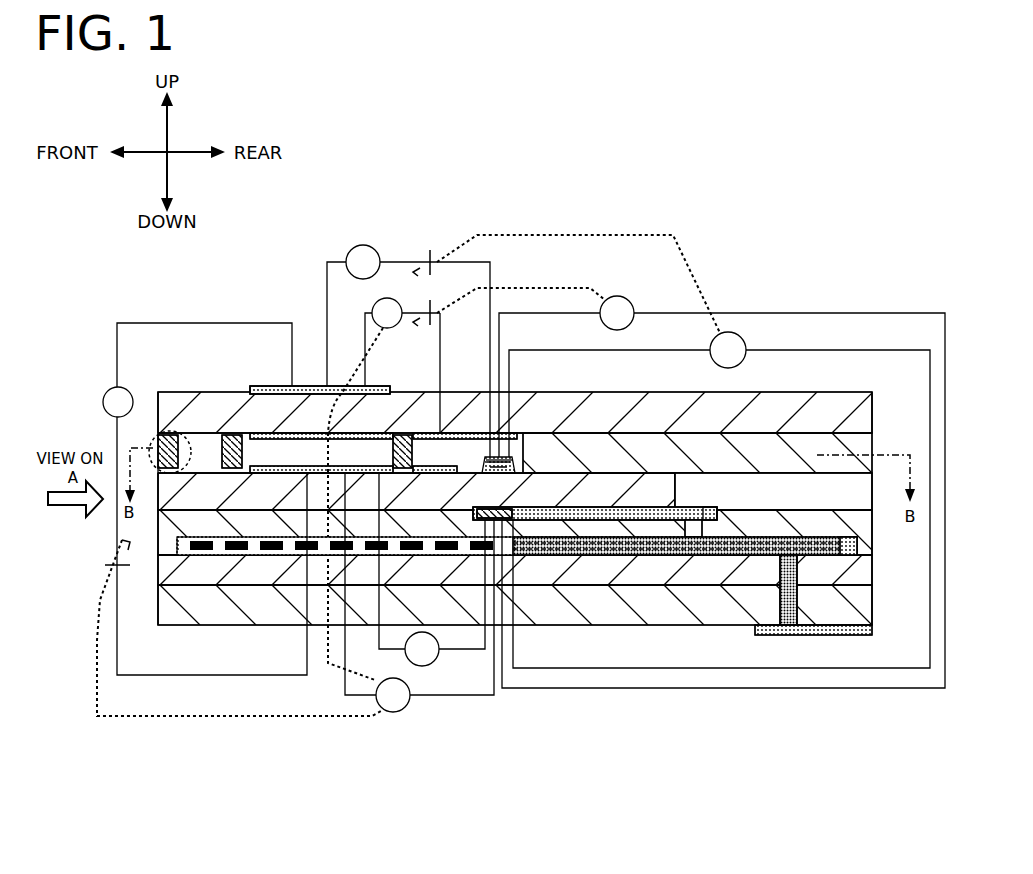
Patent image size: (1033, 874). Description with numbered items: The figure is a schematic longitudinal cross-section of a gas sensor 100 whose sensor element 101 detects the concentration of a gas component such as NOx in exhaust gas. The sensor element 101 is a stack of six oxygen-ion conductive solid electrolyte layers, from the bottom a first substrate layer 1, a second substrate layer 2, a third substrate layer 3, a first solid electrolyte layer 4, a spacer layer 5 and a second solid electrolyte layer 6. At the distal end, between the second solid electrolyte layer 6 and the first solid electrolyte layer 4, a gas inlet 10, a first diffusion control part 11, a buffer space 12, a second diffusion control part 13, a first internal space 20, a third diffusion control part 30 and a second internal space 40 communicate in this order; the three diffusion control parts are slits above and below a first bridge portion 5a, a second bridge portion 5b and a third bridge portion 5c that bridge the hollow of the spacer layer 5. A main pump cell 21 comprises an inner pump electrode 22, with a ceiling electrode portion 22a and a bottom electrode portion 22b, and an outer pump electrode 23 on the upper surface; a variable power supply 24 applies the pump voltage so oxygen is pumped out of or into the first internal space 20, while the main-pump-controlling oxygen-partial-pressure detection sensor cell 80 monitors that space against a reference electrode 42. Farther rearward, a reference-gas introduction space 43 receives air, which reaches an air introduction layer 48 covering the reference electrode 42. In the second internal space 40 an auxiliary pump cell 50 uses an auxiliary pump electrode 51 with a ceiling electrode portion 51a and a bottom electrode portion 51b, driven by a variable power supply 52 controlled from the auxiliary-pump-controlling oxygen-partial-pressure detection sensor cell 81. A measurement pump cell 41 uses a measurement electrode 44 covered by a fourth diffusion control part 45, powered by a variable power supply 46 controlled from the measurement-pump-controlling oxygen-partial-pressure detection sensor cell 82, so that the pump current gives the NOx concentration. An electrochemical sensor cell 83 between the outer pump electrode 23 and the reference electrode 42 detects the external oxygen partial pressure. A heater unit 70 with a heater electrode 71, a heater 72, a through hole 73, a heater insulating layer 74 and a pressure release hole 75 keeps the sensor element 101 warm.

The first substrate layer 1 is at (872, 605).
The second substrate layer 2 is at (872, 568).
The third substrate layer 3 is at (872, 530).
The first solid electrolyte layer 4 is at (157, 485).
The spacer layer 5 is at (872, 440).
The first bridge portion 5a is at (170, 433).
The second bridge portion 5b is at (236, 433).
The third bridge portion 5c is at (401, 433).
The second solid electrolyte layer 6 is at (872, 413).
The gas inlet 10 is at (157, 430).
The first diffusion control part 11 is at (183, 433).
The buffer space 12 is at (224, 433).
The second diffusion control part 13 is at (233, 433).
The first internal space 20 is at (355, 452).
The main pump cell 21 is at (200, 322).
The inner pump electrode 22 is at (303, 433).
The ceiling electrode portion 22a is at (335, 387).
The bottom electrode portion 22b is at (300, 467).
The outer pump electrode 23 is at (263, 386).
The variable power supply 24 is at (108, 563).
The third diffusion control part 30 is at (392, 432).
The second internal space 40 is at (422, 392).
The measurement pump cell 41 is at (350, 249).
The reference electrode 42 is at (517, 506).
The reference-gas introduction space 43 is at (867, 503).
The measurement electrode 44 is at (500, 474).
The fourth diffusion control part 45 is at (486, 460).
The variable power supply 46 is at (431, 257).
The air introduction layer 48 is at (678, 512).
The auxiliary pump cell 50 is at (371, 306).
The auxiliary pump electrode 51 is at (462, 400).
The ceiling electrode portion 51a is at (527, 400).
The bottom electrode portion 51b is at (426, 473).
The variable power supply 52 is at (433, 326).
The heater unit 70 is at (583, 556).
The heater electrode 71 is at (873, 630).
The heater 72 is at (203, 556).
The through hole 73 is at (793, 600).
The heater insulating layer 74 is at (181, 556).
The pressure release hole 75 is at (700, 516).
The main-pump-controlling oxygen-partial-pressure detection sensor cell 80 is at (426, 704).
The auxiliary-pump-controlling oxygen-partial-pressure detection sensor cell 81 is at (778, 308).
The measurement-pump-controlling oxygen-partial-pressure detection sensor cell 82 is at (783, 347).
The electrochemical sensor cell 83 is at (452, 660).
The gas sensor 100 is at (808, 232).
The sensor element 101 is at (180, 368).